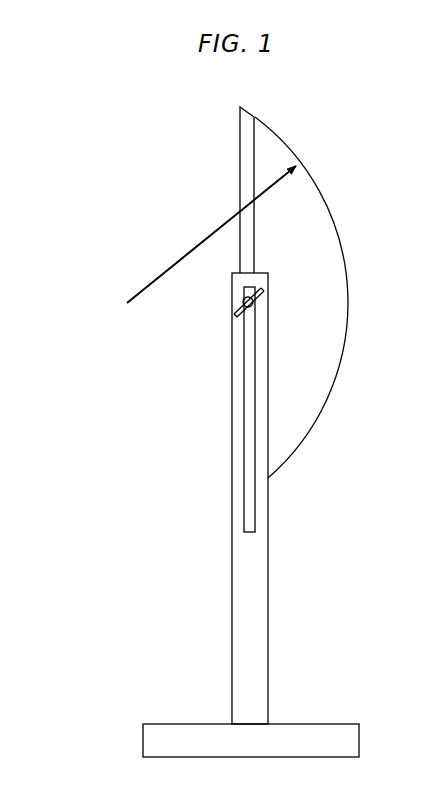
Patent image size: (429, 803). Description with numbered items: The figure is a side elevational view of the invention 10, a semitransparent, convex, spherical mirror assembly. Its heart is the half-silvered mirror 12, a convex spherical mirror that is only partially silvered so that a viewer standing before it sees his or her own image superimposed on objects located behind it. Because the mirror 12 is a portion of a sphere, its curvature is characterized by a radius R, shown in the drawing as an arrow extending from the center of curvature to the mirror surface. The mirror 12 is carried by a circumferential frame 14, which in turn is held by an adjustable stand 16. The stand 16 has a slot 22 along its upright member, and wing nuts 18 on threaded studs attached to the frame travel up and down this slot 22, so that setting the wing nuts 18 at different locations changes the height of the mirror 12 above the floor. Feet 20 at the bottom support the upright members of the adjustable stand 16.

The invention 10 is at (172, 134).
The half-silvered mirror 12 is at (333, 208).
The circumferential frame 14 is at (246, 121).
The adjustable stand 16 is at (232, 635).
The wing nuts 18 is at (243, 302).
The feet 20 is at (185, 724).
The slots 22 is at (248, 447).
The radius R is at (202, 246).